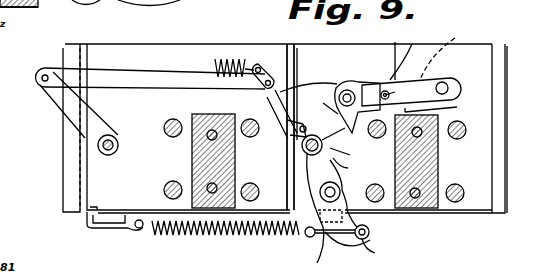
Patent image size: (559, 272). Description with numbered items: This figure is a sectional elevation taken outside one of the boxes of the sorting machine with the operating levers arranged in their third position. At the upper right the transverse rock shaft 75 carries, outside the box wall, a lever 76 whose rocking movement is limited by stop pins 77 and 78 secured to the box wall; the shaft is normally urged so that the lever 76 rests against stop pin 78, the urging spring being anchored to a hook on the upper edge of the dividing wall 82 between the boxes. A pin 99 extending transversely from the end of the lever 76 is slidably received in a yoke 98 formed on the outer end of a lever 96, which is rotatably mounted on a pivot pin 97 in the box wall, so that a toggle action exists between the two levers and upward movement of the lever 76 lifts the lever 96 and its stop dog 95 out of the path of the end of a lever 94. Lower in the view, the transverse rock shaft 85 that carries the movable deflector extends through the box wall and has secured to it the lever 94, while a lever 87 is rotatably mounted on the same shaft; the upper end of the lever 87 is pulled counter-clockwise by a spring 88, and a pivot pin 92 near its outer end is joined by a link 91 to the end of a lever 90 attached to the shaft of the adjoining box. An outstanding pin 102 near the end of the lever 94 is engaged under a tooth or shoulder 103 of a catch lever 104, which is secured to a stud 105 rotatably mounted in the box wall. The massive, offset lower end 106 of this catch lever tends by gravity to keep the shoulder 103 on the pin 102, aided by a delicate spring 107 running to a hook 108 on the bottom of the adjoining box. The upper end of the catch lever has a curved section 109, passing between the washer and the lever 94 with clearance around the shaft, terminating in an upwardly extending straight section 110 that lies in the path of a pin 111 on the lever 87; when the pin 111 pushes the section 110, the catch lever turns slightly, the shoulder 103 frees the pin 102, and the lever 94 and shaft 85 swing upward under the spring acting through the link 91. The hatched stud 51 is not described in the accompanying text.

The stud 51 is at (458, 140).
The transverse rock shaft 75 is at (449, 88).
The lever 76 is at (447, 80).
The stop pin 77 is at (395, 42).
The stop pin 78 is at (458, 108).
The dividing wall 82 is at (298, 61).
The transverse rock shaft 85 is at (118, 145).
The lever 87 is at (308, 88).
The spring 88 is at (240, 60).
The lever 90 is at (55, 95).
The link 91 is at (112, 80).
The pivot pin 92 is at (280, 62).
The lever 94 is at (347, 155).
The stop dog 95 is at (320, 105).
The lever 96 is at (358, 82).
The pivot pin 97 is at (340, 90).
The yoke 98 is at (450, 53).
The pin 99 is at (406, 55).
The pin 102 is at (388, 137).
The shoulder 103 is at (352, 167).
The catch lever 104 is at (310, 173).
The stud 105 is at (343, 249).
The lower end of lever 106 is at (377, 244).
The spring 107 is at (170, 236).
The hook 108 is at (136, 231).
The curved section 109 is at (336, 118).
The straight section 110 is at (283, 108).
The pin 111 is at (285, 119).